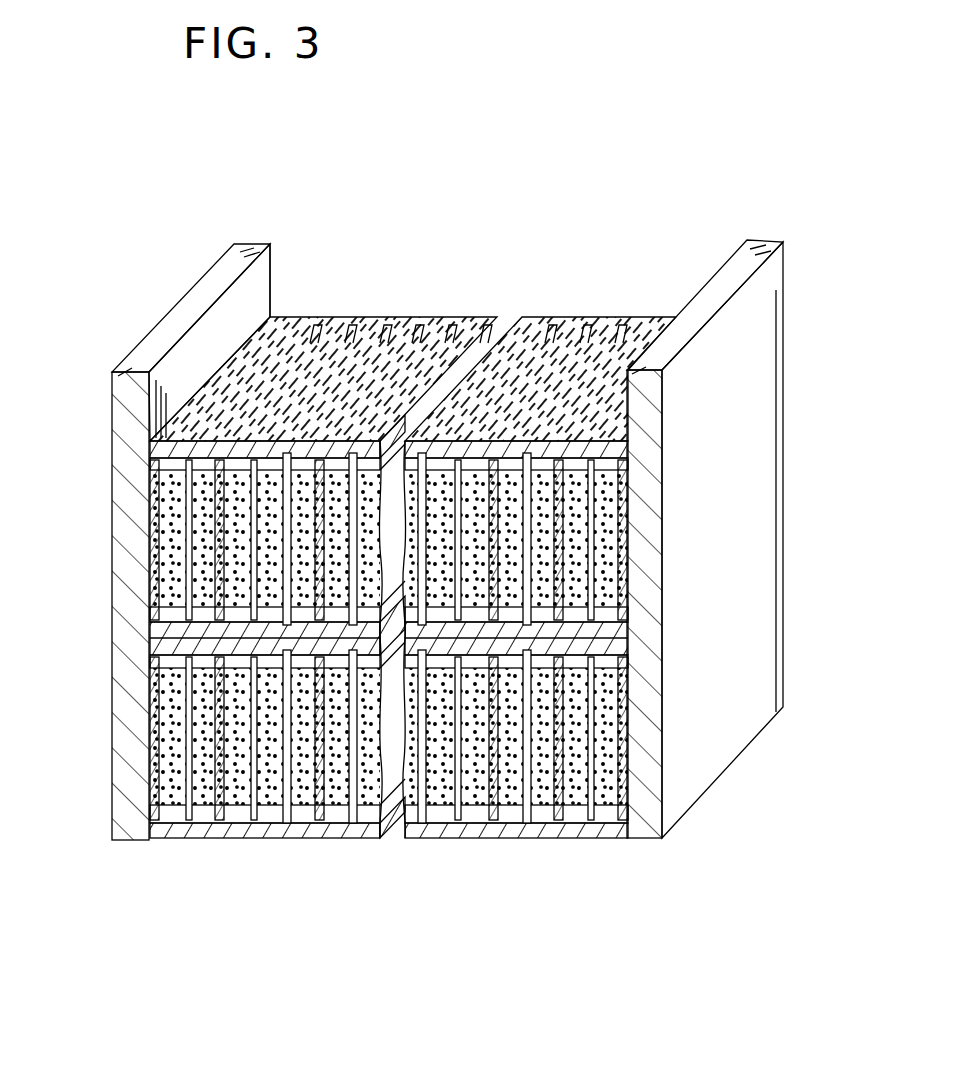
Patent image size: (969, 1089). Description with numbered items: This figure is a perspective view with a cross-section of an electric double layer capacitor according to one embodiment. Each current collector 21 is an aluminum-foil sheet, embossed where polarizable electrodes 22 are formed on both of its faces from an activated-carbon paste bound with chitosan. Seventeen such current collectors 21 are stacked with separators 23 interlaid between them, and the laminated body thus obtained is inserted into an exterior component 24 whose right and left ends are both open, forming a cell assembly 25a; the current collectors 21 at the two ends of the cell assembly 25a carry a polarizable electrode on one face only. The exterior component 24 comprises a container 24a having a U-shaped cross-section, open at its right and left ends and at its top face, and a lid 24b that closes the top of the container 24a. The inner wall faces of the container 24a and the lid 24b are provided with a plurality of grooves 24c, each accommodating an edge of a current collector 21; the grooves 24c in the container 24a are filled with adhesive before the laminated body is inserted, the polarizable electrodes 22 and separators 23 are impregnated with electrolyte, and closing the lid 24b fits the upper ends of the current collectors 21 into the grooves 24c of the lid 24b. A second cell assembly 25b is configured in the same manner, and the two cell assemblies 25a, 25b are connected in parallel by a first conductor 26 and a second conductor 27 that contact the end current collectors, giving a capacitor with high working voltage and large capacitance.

The current collector 21 is at (217, 567).
The polarizable electrode 22 is at (205, 530).
The separator 23 is at (590, 547).
The exterior component 24 is at (598, 320).
The container 24a is at (440, 590).
The lid 24b is at (528, 440).
The groove 24c is at (187, 483).
The cell assembly 25a is at (366, 316).
The cell assembly 25b is at (367, 852).
The first conductor 26 is at (752, 456).
The second conductor 27 is at (190, 316).